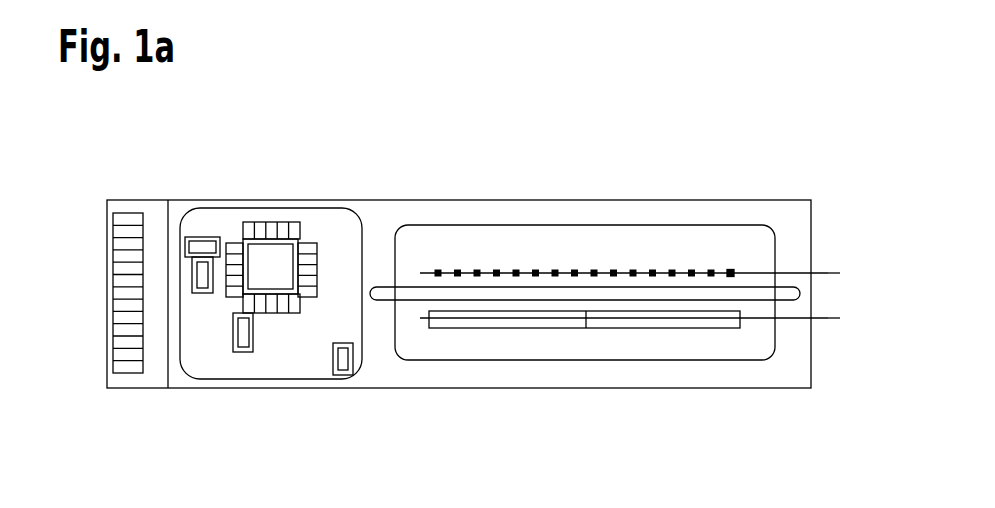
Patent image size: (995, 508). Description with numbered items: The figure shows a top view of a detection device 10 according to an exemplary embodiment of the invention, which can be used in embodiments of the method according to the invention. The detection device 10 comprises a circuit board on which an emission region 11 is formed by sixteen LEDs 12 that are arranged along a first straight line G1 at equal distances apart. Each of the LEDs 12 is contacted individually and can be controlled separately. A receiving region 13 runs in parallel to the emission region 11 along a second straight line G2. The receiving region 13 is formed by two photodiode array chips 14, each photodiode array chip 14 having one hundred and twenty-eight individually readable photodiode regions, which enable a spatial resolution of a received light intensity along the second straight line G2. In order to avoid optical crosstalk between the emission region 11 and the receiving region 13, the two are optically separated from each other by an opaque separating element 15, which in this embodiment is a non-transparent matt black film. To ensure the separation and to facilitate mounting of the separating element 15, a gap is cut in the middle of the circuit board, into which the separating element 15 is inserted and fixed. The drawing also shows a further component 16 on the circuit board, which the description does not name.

The detection device 10 is at (427, 378).
The emission region 11 is at (568, 263).
The LED 12 is at (731, 270).
The receiving region 13 is at (492, 331).
The photodiode array chip 14 is at (657, 324).
The separating element 15 is at (608, 293).
The evaluation circuit (ASIC) 16 is at (260, 257).
The first straight line G1 is at (828, 272).
The second straight line G2 is at (828, 319).